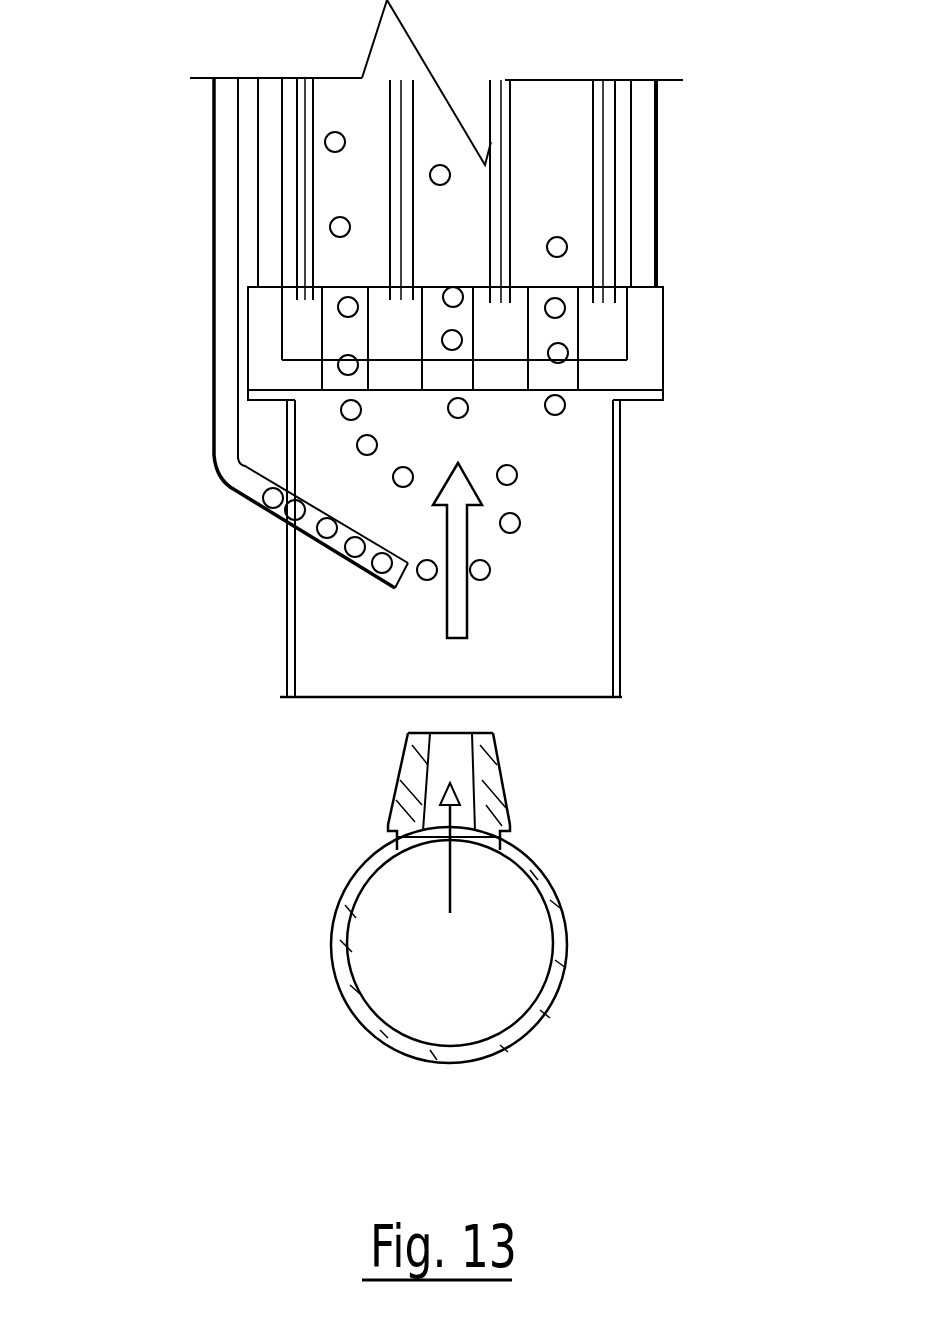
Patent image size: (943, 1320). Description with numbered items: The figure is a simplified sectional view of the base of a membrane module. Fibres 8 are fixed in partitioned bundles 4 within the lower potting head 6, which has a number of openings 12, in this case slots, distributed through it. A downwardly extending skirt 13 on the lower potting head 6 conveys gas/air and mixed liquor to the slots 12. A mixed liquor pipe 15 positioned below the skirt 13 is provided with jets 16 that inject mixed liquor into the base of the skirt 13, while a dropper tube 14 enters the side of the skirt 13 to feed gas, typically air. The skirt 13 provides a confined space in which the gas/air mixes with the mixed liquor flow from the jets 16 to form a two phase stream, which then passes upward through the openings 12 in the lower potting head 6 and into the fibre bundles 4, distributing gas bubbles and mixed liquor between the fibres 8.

The partitioned bundle 4 is at (350, 175).
The fibre 8 is at (513, 208).
The lower potting head 6 is at (295, 337).
The opening 12 is at (553, 328).
The dropper tube 14 is at (215, 462).
The skirt 13 is at (622, 582).
The jet 16 is at (510, 800).
The mixed liquor pipe 15 is at (528, 968).